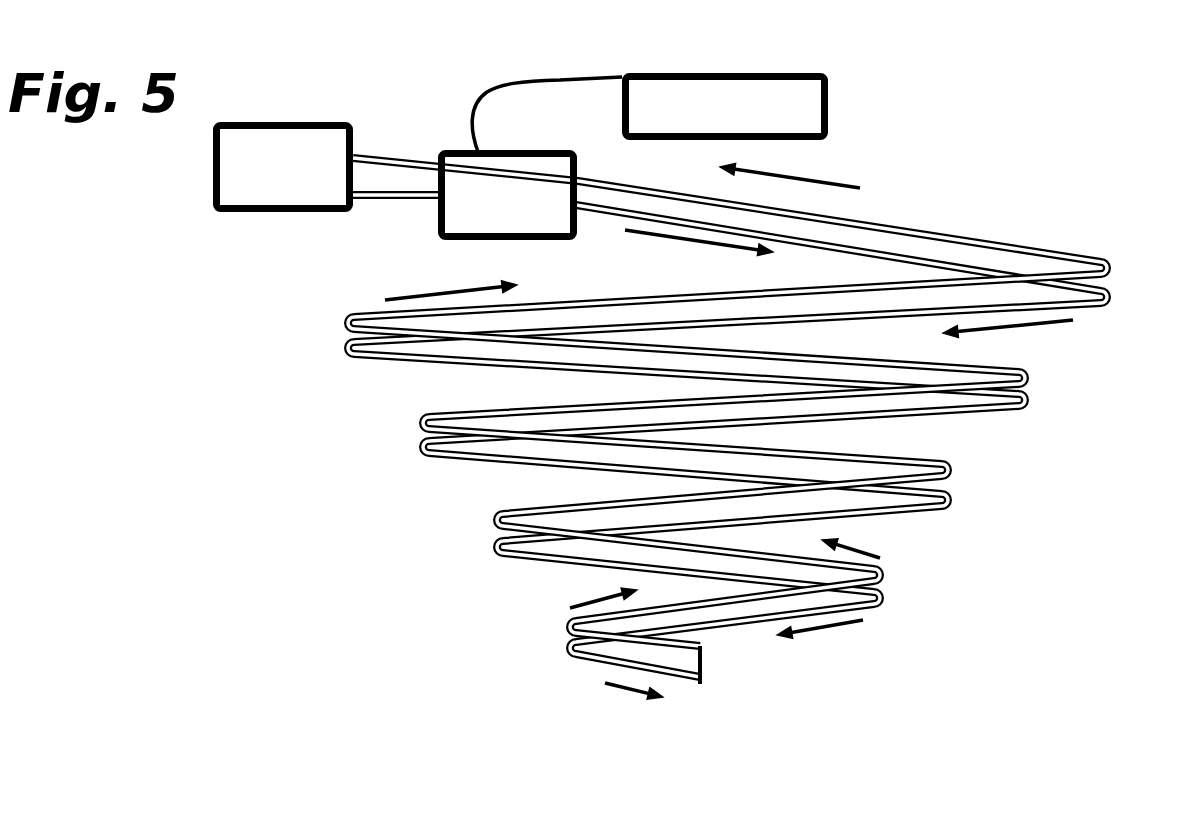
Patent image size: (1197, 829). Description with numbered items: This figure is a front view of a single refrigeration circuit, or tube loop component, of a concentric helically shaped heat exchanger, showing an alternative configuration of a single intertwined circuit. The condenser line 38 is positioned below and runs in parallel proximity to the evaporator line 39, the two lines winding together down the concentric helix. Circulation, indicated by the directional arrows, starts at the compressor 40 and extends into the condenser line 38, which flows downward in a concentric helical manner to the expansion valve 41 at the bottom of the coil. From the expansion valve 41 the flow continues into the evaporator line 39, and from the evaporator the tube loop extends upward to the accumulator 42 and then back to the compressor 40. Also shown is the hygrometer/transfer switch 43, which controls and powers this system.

The condenser line 38 is at (1113, 305).
The evaporator line 39 is at (1008, 223).
The compressor 40 is at (508, 195).
The expansion valve 41 is at (720, 669).
The accumulator 42 is at (283, 167).
The hygrometer/transfer switch 43 is at (648, 115).